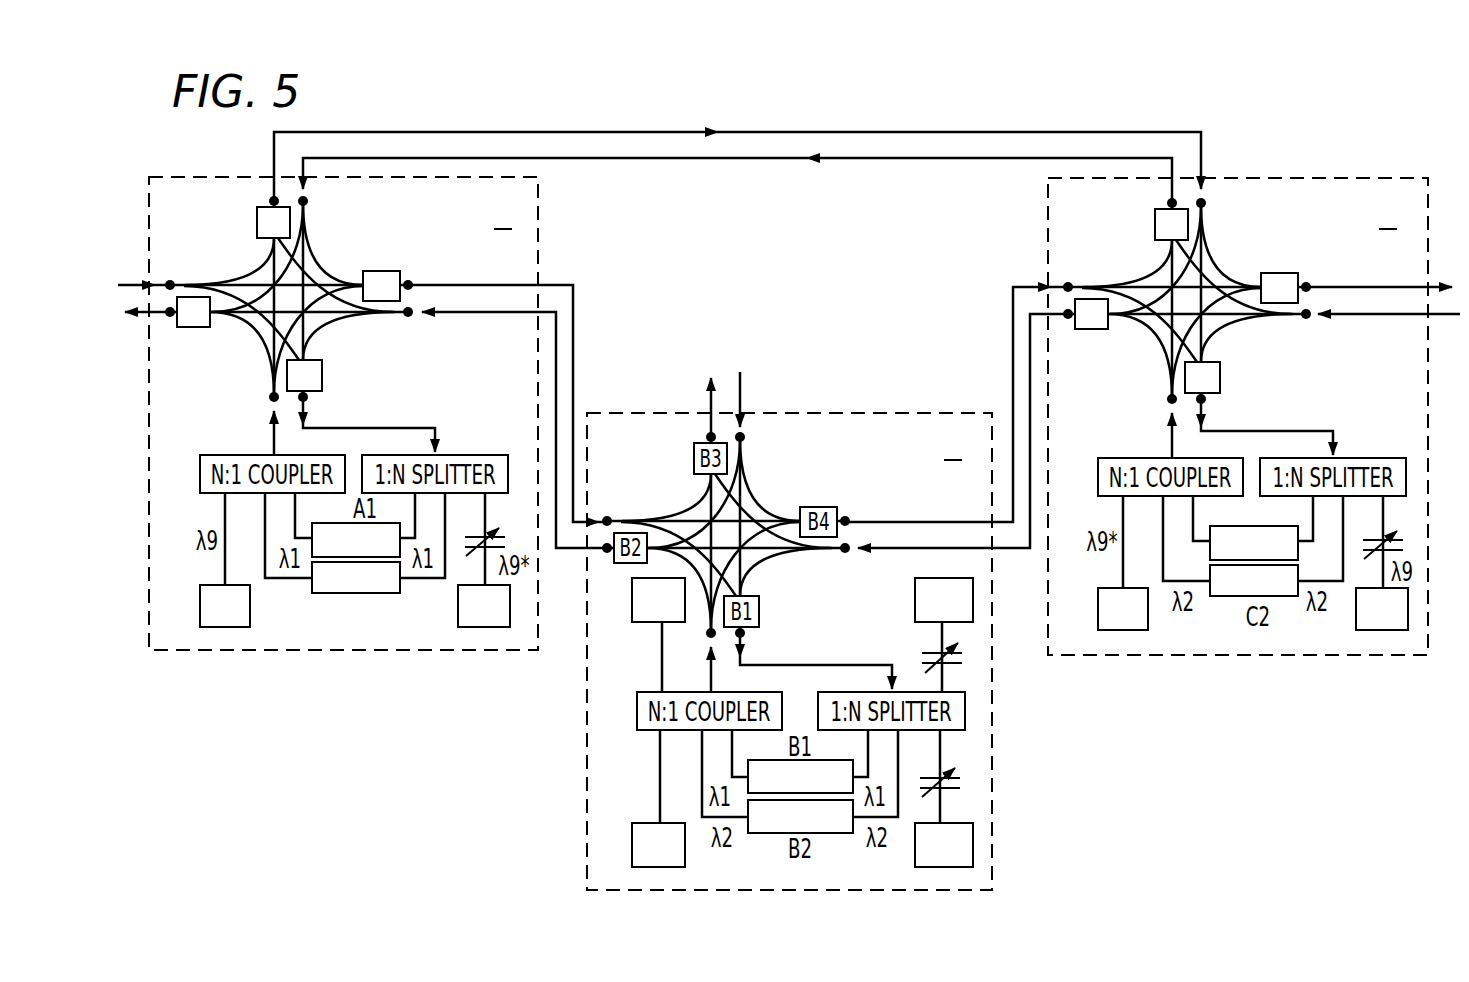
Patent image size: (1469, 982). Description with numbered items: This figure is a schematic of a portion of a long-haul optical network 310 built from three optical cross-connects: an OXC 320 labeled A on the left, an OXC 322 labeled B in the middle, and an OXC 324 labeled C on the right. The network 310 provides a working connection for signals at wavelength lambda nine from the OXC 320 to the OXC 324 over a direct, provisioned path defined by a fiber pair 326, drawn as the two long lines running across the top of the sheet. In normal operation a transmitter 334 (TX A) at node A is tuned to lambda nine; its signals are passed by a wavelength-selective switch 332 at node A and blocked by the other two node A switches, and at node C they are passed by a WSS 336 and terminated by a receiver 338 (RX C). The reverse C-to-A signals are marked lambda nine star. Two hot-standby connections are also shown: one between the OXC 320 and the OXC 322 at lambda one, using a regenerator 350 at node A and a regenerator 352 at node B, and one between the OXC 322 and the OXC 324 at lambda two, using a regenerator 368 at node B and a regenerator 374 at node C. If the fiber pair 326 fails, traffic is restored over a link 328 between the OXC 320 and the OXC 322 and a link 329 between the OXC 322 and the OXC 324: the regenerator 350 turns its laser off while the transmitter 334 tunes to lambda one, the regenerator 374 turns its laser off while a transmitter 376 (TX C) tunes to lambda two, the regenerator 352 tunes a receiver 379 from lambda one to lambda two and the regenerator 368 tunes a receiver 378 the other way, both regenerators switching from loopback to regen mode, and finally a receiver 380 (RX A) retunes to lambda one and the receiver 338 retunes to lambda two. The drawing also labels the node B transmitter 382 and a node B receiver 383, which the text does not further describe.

The network 310 is at (1247, 68).
The OXC 320 is at (578, 213).
The OXC 322 is at (896, 425).
The OXC 324 is at (1048, 212).
The fiber pair 326 is at (862, 174).
The link 328 is at (590, 328).
The link 329 is at (1000, 313).
The wavelength-selective switch 332 is at (257, 217).
The transmitter 334 is at (228, 690).
The WSS 336 is at (1256, 375).
The receiver 338 is at (1380, 695).
The regenerator 350 is at (361, 609).
The regenerator 352 is at (750, 915).
The regenerator 368 is at (846, 915).
The regenerator 374 is at (1240, 626).
The transmitter 376 is at (1120, 695).
The receiver 378 is at (1050, 840).
The receiver 379 is at (915, 600).
The receiver 380 is at (490, 690).
The transmitter TX_B 382 is at (632, 840).
The receiver RX_B1 of node B (left) 383 is at (612, 640).